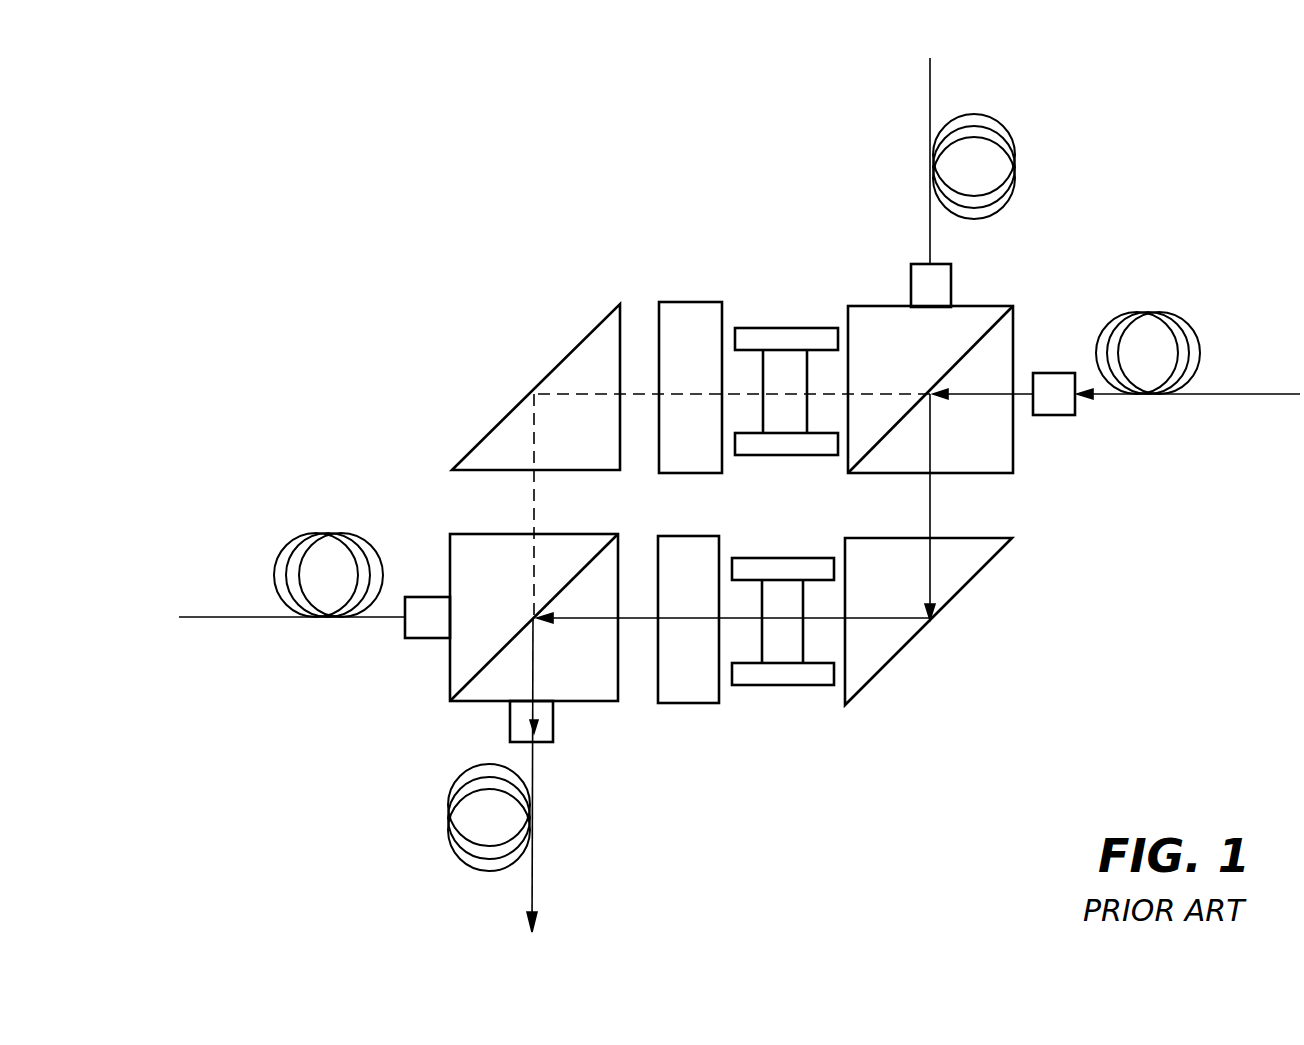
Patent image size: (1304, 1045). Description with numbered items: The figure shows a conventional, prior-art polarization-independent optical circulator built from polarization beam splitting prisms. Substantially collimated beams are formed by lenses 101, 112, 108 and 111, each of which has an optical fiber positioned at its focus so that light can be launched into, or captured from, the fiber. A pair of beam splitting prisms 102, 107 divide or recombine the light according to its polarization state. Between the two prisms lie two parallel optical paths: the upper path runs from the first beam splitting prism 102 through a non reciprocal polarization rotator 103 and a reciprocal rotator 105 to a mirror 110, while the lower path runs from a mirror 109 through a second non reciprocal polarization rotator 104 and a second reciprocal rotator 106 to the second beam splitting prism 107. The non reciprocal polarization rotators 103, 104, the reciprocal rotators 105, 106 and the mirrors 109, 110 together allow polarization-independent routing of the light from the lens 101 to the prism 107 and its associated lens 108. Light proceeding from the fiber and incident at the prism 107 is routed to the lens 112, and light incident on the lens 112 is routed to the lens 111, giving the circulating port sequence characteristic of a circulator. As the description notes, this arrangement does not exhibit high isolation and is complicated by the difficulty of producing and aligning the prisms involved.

The lens 101 is at (1055, 415).
The beam splitting prism 102 is at (875, 310).
The non reciprocal polarization rotator 103 is at (780, 335).
The non reciprocal polarization rotator 104 is at (792, 680).
The reciprocal rotator 105 is at (684, 315).
The reciprocal rotator 106 is at (692, 695).
The beam splitting prism 107 is at (595, 695).
The lens 108 is at (512, 725).
The mirror 109 is at (907, 647).
The mirror 110 is at (485, 443).
The lens 111 is at (418, 632).
The lens 112 is at (945, 283).